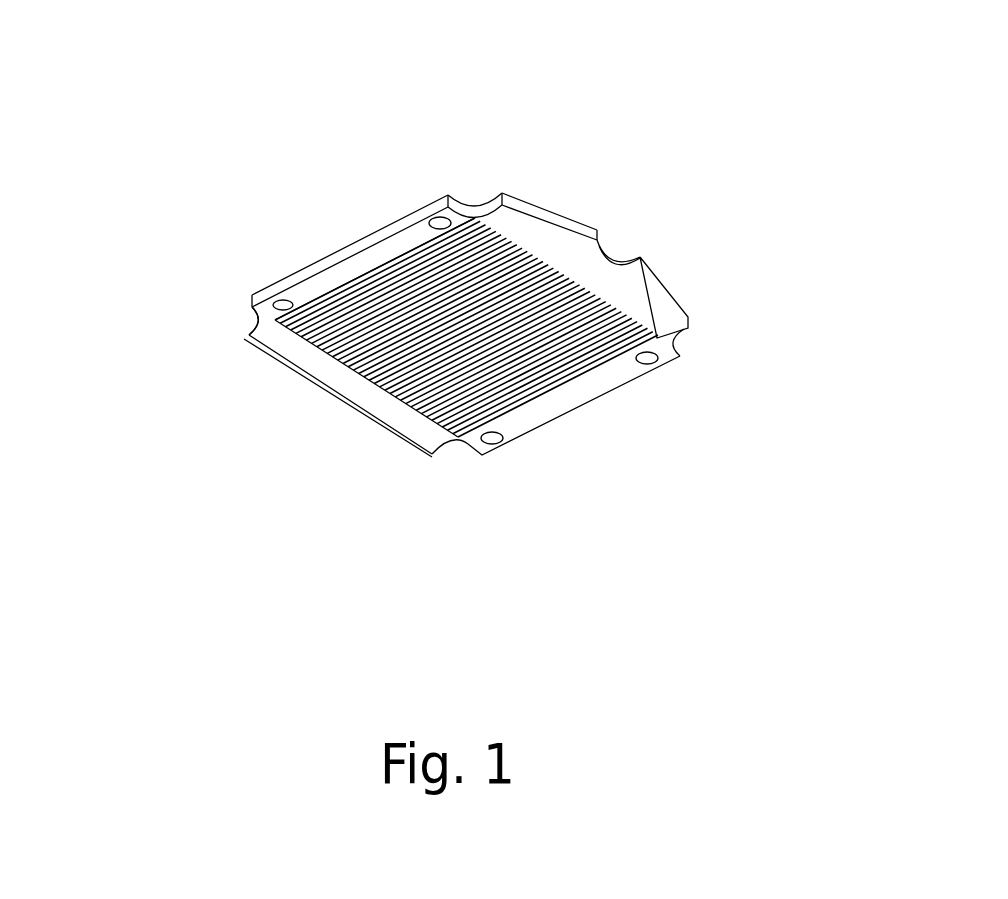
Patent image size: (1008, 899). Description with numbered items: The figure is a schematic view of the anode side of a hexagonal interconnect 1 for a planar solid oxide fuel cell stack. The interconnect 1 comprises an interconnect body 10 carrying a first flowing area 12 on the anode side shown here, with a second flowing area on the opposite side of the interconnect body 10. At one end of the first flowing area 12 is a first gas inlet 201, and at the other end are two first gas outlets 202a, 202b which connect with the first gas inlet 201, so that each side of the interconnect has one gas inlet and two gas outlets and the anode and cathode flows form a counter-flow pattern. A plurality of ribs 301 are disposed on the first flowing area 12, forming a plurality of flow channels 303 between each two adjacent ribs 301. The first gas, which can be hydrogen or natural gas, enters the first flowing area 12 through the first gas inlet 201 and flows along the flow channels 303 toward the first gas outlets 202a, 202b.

The interconnect 1 is at (451, 305).
The interconnect body 10 is at (555, 418).
The first flowing area 12 is at (390, 260).
The first gas inlet 201 is at (627, 240).
The first gas outlet 202a is at (247, 313).
The first gas outlet 202b is at (452, 470).
The rib 301 is at (383, 388).
The flow channel 303 is at (332, 293).